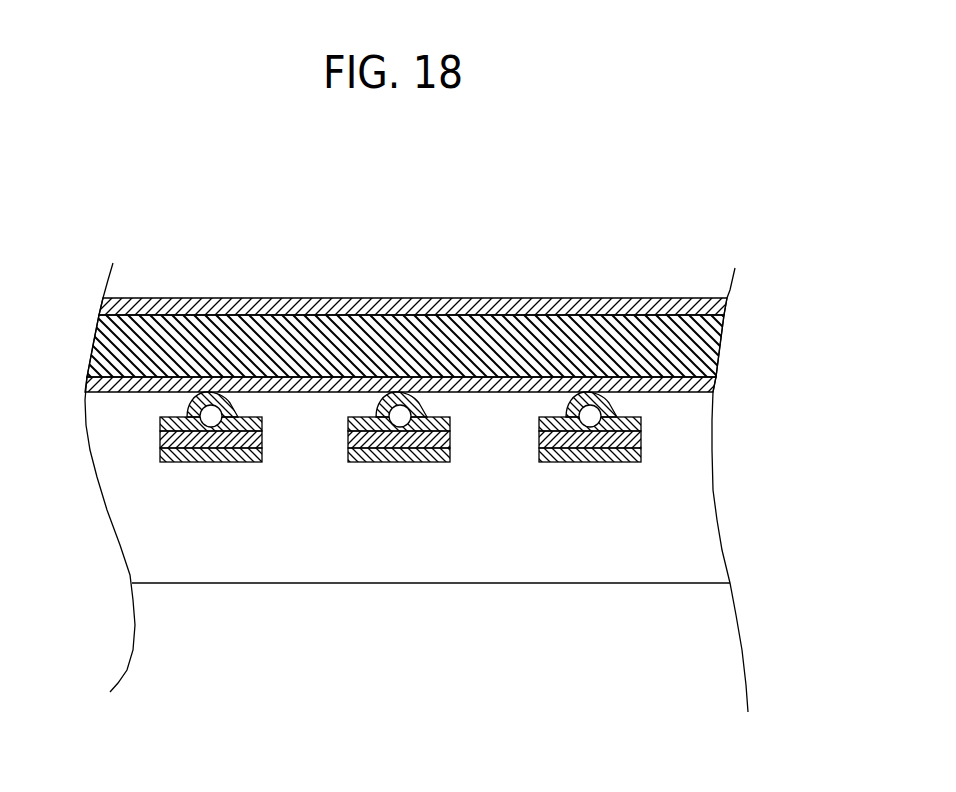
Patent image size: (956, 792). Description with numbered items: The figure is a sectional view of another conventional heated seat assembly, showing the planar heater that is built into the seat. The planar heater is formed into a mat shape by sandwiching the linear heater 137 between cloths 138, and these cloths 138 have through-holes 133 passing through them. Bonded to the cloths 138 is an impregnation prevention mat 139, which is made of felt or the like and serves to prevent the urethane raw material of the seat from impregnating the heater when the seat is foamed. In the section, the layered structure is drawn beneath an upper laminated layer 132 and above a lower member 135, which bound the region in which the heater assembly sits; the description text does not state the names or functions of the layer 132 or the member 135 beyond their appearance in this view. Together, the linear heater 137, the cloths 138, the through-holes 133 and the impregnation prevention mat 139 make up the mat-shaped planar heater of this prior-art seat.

The substrate layer 132 is at (641, 346).
The through-holes 133 is at (298, 490).
The base member 135 is at (475, 563).
The linear heater 137 is at (590, 416).
The cloths 138 is at (635, 443).
The impregnation prevention mat 139 is at (644, 463).